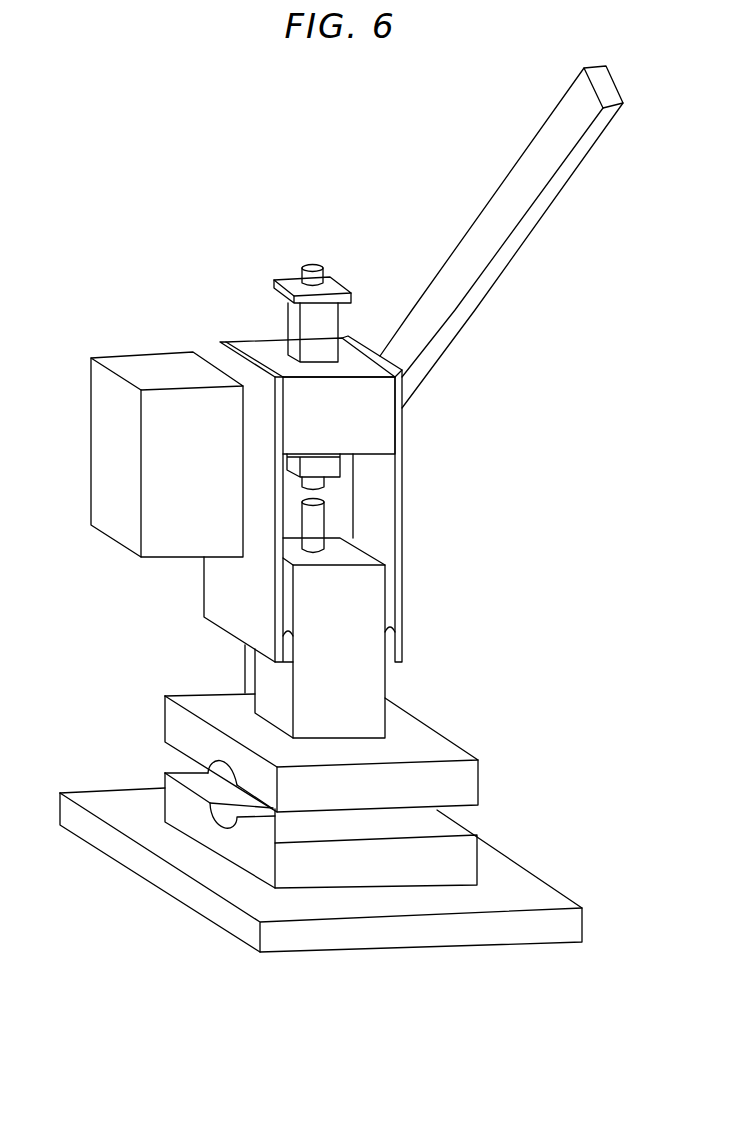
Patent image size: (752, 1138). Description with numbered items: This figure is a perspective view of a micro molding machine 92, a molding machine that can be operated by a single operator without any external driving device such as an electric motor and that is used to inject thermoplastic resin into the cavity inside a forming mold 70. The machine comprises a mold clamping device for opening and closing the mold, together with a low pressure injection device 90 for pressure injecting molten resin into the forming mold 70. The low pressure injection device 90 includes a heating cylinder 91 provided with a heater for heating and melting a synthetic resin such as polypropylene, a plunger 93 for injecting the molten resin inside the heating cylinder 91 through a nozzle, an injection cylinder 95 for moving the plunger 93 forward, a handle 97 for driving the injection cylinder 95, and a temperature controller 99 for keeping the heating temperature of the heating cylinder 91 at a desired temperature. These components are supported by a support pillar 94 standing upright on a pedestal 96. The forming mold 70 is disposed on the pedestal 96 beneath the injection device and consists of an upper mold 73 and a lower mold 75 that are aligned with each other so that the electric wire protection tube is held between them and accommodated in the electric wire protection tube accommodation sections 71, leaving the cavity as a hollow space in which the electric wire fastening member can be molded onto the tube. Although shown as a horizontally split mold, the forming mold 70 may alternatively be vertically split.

The forming mold 70 is at (146, 746).
The electric wire protection tube accommodation section 71 is at (215, 820).
The upper mold 73 is at (391, 793).
The lower mold 75 is at (342, 870).
The low pressure injection device 90 is at (442, 457).
The heating cylinder 91 is at (385, 692).
The micro molding machine 92 is at (234, 223).
The plunger 93 is at (313, 522).
The support pillar 94 is at (245, 682).
The injection cylinder 95 is at (294, 330).
The pedestal 96 is at (545, 882).
The handle 97 is at (543, 217).
The temperature controller 99 is at (112, 453).